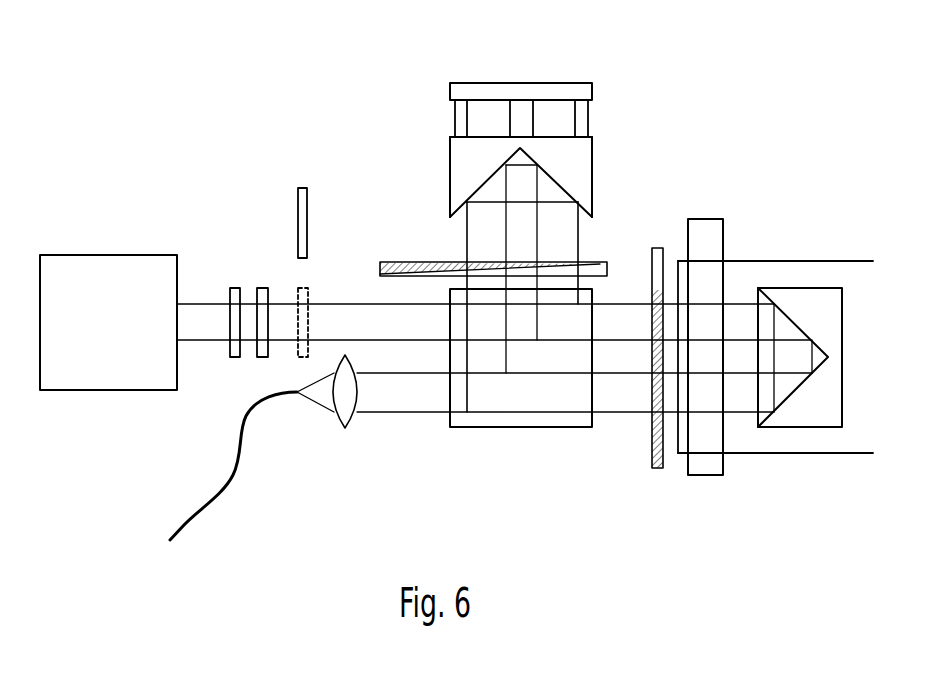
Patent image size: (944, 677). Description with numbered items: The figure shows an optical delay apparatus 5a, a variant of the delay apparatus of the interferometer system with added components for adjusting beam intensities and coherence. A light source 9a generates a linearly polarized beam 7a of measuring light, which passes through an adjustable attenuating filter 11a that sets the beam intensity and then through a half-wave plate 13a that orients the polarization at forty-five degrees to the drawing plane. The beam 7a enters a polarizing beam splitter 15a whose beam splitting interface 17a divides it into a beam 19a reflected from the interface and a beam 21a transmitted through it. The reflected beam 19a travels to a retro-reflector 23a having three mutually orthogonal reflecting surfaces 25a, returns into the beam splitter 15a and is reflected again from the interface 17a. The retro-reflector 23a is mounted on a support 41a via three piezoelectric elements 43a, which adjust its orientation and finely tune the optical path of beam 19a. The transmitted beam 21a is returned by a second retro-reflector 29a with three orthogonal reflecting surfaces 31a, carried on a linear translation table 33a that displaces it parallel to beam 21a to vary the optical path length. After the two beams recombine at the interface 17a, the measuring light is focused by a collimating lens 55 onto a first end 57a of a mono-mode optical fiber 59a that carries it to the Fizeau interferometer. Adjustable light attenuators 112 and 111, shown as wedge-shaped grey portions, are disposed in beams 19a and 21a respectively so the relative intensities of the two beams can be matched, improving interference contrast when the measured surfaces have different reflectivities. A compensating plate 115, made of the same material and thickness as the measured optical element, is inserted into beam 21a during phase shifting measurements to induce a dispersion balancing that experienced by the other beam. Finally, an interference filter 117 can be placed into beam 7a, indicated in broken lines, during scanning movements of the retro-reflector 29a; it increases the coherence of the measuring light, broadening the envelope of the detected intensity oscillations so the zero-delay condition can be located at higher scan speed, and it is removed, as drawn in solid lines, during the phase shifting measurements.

The optical delay apparatus 5a is at (224, 131).
The beam of measuring light 7a is at (197, 300).
The light source 9a is at (107, 255).
The adjustable attenuating filter 11a is at (234, 288).
The half-wave plate 13a is at (262, 288).
The polarizing beam splitter 15a is at (530, 428).
The beam splitting interface 17a is at (462, 430).
The reflected beam portion 19a is at (578, 228).
The transmitted beam portion 21a is at (731, 418).
The retro-reflector 23a is at (592, 173).
The reflecting surfaces 25a is at (452, 216).
The retro-reflector 29a is at (825, 427).
The reflecting surfaces 31a is at (756, 423).
The linear translation table 33a is at (853, 261).
The support 41a is at (592, 90).
The piezoelectric elements 43a is at (455, 117).
The collimating lens 55 is at (345, 428).
The first end of optical fiber 57a is at (297, 395).
The mono-mode optical fiber 59a is at (188, 515).
The adjustable light attenuator 111 is at (658, 468).
The adjustable light attenuator 112 is at (380, 262).
The compensating plate 115 is at (723, 236).
The interference filter 117 is at (298, 200).